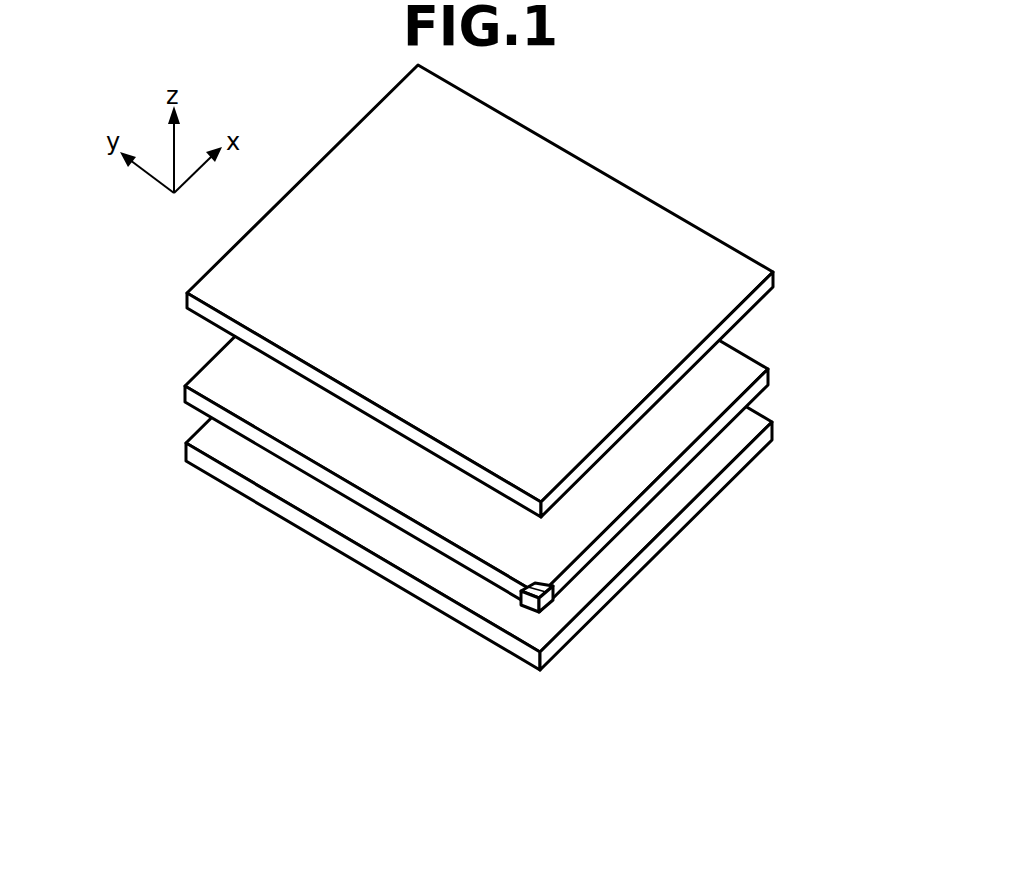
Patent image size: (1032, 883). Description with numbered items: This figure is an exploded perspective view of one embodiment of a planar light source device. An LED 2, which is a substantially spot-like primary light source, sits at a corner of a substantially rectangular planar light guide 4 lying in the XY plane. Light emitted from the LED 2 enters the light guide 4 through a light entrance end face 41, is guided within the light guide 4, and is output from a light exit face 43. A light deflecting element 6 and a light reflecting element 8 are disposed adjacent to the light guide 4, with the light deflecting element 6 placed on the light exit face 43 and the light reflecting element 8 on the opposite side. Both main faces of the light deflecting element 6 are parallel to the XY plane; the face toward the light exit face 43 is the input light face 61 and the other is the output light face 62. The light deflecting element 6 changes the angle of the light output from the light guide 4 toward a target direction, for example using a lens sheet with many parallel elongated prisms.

The LED 2 is at (572, 647).
The light guide 4 is at (504, 385).
The light deflecting element 6 is at (480, 291).
The light reflecting element 8 is at (700, 505).
The light entrance end face 41 is at (553, 596).
The light exit face 43 is at (402, 493).
The input light face 61 is at (343, 405).
The output light face 62 is at (609, 210).